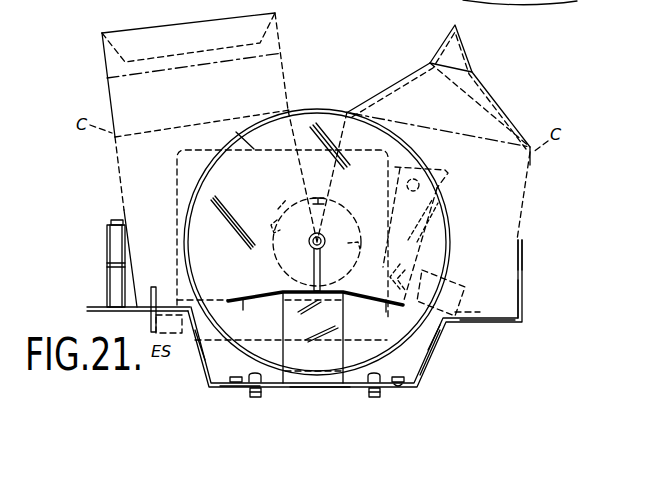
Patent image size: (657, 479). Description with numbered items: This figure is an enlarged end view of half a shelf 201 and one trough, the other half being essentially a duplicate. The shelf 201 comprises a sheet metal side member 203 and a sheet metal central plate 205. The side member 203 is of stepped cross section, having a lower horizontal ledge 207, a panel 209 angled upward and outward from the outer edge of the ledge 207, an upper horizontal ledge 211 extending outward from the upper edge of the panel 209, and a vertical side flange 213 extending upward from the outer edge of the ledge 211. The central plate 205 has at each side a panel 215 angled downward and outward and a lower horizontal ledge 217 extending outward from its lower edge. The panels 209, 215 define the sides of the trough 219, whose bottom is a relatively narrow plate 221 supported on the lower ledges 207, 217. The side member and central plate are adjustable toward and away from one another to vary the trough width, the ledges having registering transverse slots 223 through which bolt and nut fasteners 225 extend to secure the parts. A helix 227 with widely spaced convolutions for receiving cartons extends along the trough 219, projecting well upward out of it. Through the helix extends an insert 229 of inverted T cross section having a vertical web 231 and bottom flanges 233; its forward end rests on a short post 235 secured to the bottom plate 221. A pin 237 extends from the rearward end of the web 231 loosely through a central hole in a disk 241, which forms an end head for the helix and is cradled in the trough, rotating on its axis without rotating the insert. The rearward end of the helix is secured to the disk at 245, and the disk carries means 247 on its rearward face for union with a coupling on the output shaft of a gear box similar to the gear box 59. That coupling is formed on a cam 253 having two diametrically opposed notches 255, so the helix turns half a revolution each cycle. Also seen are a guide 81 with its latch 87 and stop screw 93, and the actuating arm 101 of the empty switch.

The central plate 205 is at (388, 0).
The helix 227 is at (302, 110).
The cam 253 is at (318, 196).
The speed-reducing gear box 59 is at (177, 165).
The disk 241 is at (252, 145).
The notches 255 is at (279, 230).
The pin 237 is at (306, 208).
The means for union with coupling 247 is at (278, 209).
The vertical web 231 is at (304, 262).
The insert 229 is at (283, 287).
The securement of helix to disk 245 is at (210, 305).
The bottom flanges 233 is at (246, 302).
The post 235 is at (333, 347).
The shelf 201 is at (527, 227).
The lower horizontal ledge 207 is at (400, 394).
The panel 215 is at (202, 357).
The lower horizontal ledge 217 is at (227, 388).
The trough 219 is at (403, 371).
The panel 209 is at (430, 357).
The upper horizontal ledge 211 is at (494, 325).
The vertical side flange 213 is at (519, 303).
The side member 203 is at (521, 240).
The bottom plate 221 is at (323, 391).
The bolt and nut fasteners 225 is at (262, 398).
The transverse slots 223 is at (245, 392).
The guides 81 is at (107, 243).
The screw 93 is at (113, 222).
The latch 87 is at (112, 282).
The actuating arm 101 is at (153, 292).